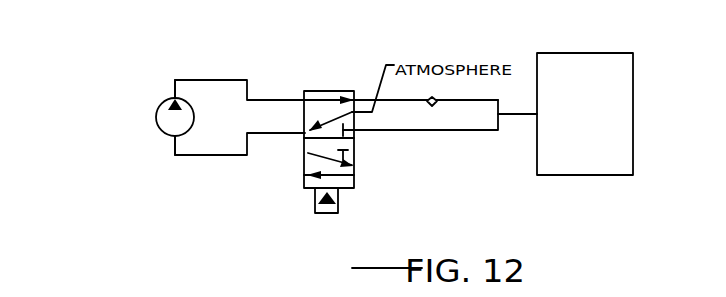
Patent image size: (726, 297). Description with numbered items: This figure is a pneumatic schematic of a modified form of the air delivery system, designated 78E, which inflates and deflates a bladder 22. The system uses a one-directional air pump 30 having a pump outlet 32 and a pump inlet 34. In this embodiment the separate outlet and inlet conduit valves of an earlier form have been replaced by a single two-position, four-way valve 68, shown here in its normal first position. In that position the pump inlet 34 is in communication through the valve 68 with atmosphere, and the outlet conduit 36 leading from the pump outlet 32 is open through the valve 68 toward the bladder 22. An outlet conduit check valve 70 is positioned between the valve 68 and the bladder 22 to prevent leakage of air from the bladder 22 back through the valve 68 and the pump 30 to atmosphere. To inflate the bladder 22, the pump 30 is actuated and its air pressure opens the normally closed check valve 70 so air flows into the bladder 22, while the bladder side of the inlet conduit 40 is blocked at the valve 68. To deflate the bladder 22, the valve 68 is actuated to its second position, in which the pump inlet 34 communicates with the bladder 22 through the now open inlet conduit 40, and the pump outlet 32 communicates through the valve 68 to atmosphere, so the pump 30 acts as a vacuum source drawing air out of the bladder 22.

The bladder 22 is at (563, 53).
The air pump 30 is at (157, 108).
The pump outlet 32 is at (175, 88).
The pump inlet 34 is at (175, 145).
The outlet conduit 36 is at (362, 98).
The inlet conduit 40 is at (415, 133).
The two-position, four-way valve 68 is at (319, 90).
The outlet conduit check valve 70 is at (437, 98).
The pressurization system 78E is at (414, 45).